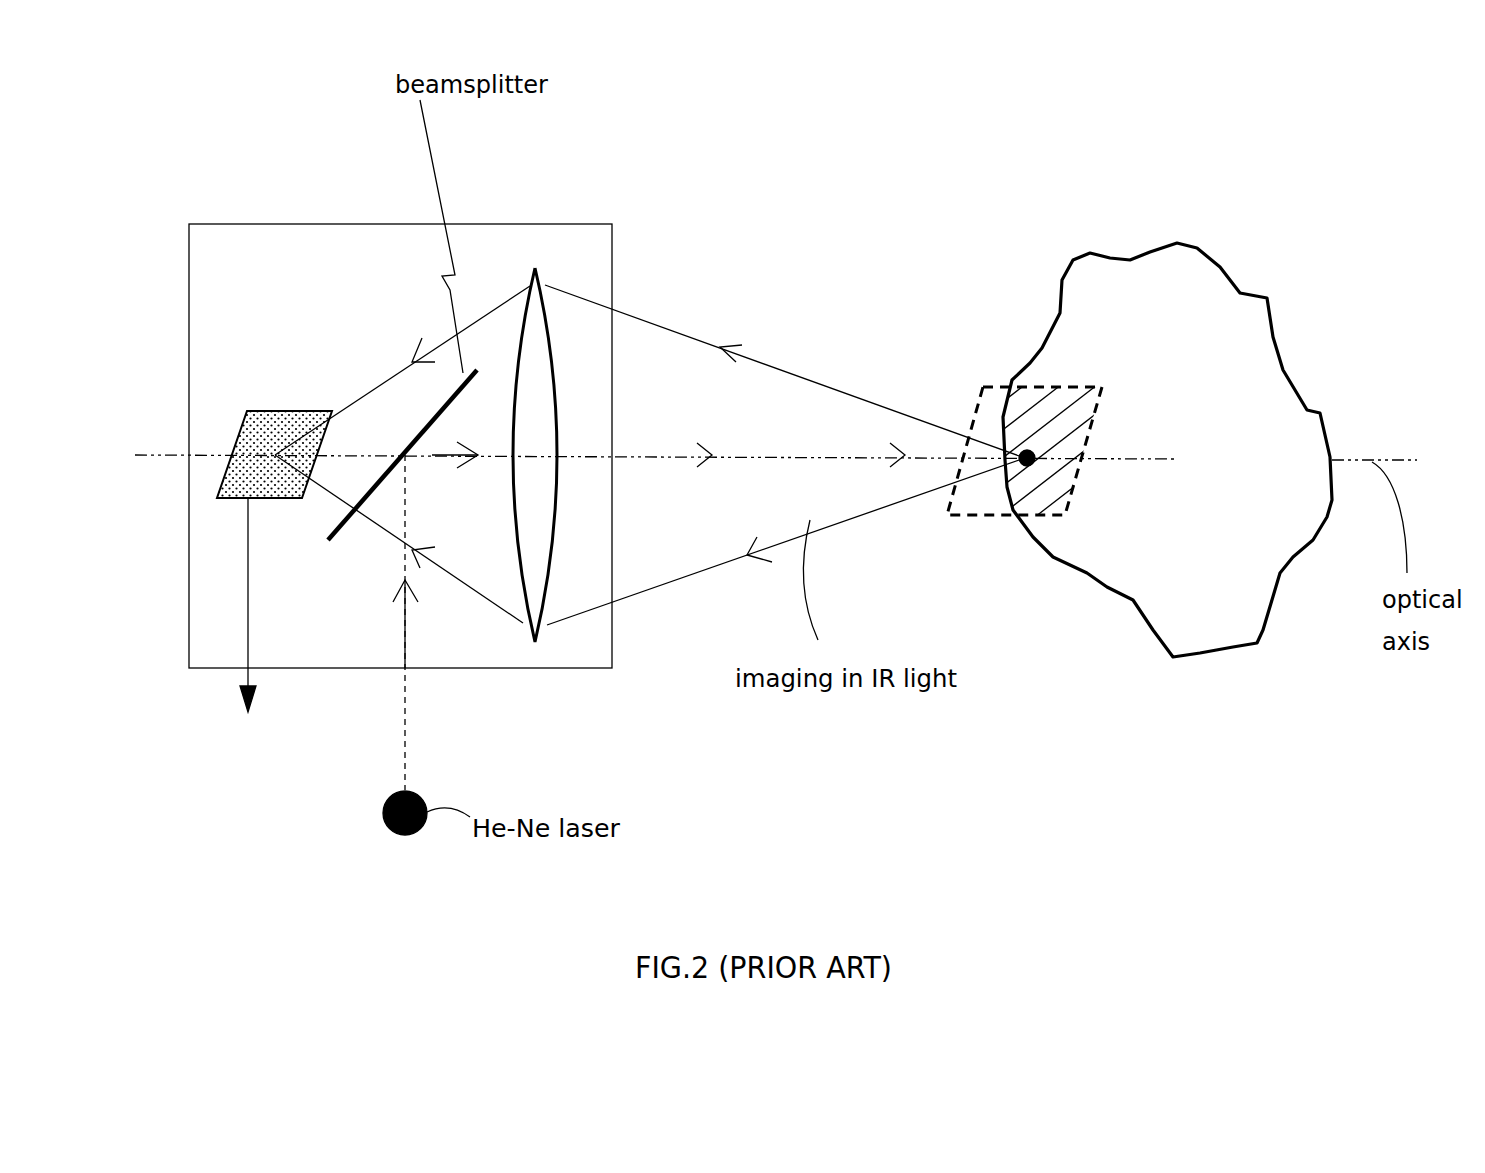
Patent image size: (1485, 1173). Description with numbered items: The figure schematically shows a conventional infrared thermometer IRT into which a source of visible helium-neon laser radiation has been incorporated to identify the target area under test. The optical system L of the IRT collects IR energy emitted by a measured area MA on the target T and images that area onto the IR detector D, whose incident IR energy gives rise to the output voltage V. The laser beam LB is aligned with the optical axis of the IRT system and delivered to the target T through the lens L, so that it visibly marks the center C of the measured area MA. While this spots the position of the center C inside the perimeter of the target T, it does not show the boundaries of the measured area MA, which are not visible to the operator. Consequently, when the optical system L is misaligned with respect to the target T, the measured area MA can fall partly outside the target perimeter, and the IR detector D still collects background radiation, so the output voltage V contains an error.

The infrared thermometer IRT is at (328, 243).
The IR detector D is at (276, 410).
The output voltage V is at (230, 640).
The optical system L is at (542, 298).
The laser beam LB is at (697, 455).
The target T is at (1180, 272).
The measured area MA is at (980, 387).
The center of the measured area C is at (1050, 472).